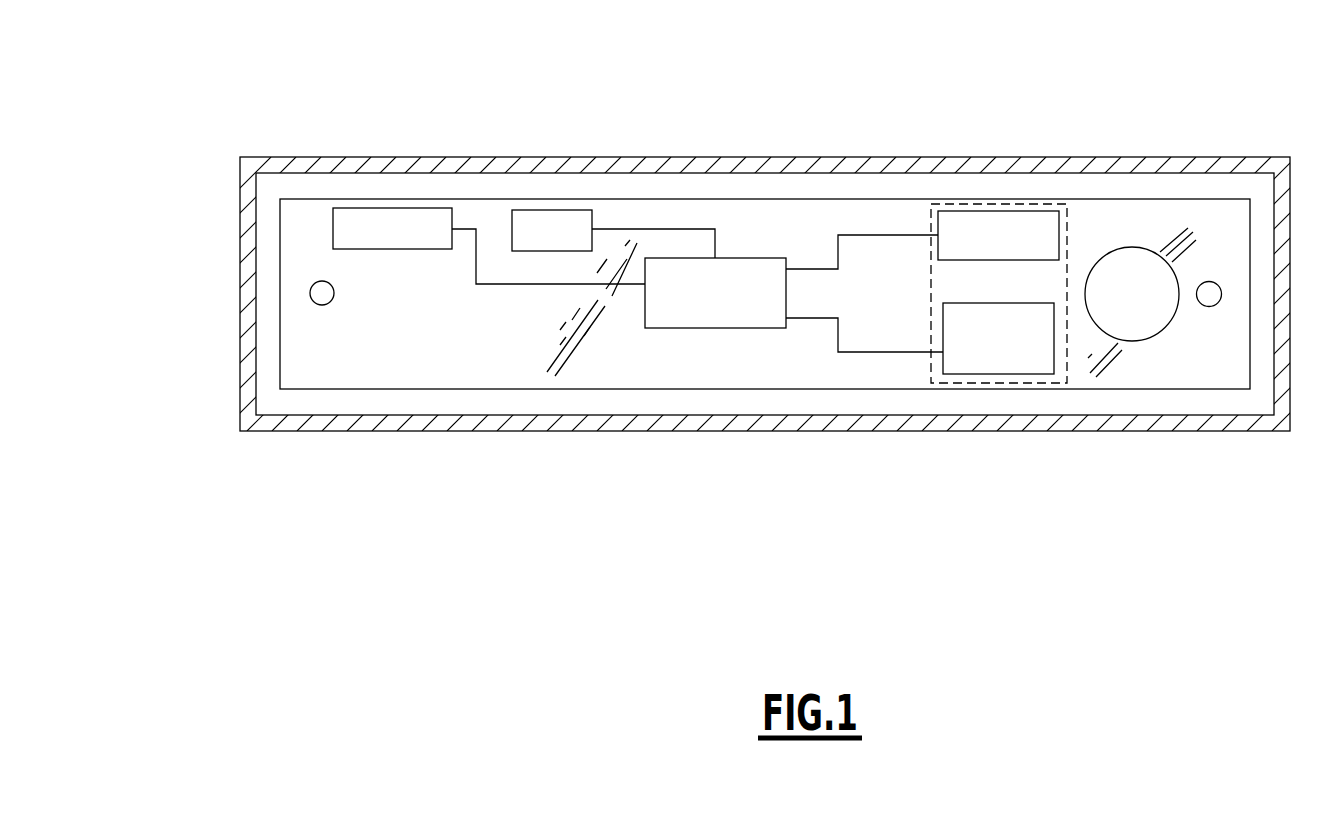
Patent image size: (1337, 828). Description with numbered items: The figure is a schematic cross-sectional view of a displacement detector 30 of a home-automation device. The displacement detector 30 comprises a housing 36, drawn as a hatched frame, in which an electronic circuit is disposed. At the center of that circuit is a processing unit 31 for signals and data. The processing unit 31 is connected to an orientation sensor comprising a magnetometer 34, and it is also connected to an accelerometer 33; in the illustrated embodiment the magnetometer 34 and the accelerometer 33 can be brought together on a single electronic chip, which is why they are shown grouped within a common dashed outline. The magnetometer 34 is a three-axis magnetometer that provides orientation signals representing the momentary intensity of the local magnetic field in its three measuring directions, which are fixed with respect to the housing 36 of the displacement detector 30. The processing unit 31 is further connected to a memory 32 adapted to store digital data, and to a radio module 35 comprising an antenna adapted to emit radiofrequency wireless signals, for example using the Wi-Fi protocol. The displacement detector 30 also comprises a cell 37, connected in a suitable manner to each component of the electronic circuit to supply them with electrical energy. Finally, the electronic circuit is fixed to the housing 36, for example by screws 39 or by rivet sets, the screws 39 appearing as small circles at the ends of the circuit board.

The displacement detector 30 is at (738, 220).
The processing unit 31 is at (765, 268).
The memory 32 is at (518, 218).
The accelerometer 33 is at (1018, 224).
The magnetometer 34 is at (1042, 368).
The radio module 35 is at (388, 213).
The housing 36 is at (1187, 423).
The cell 37 is at (1122, 260).
The screws 39 is at (318, 291).